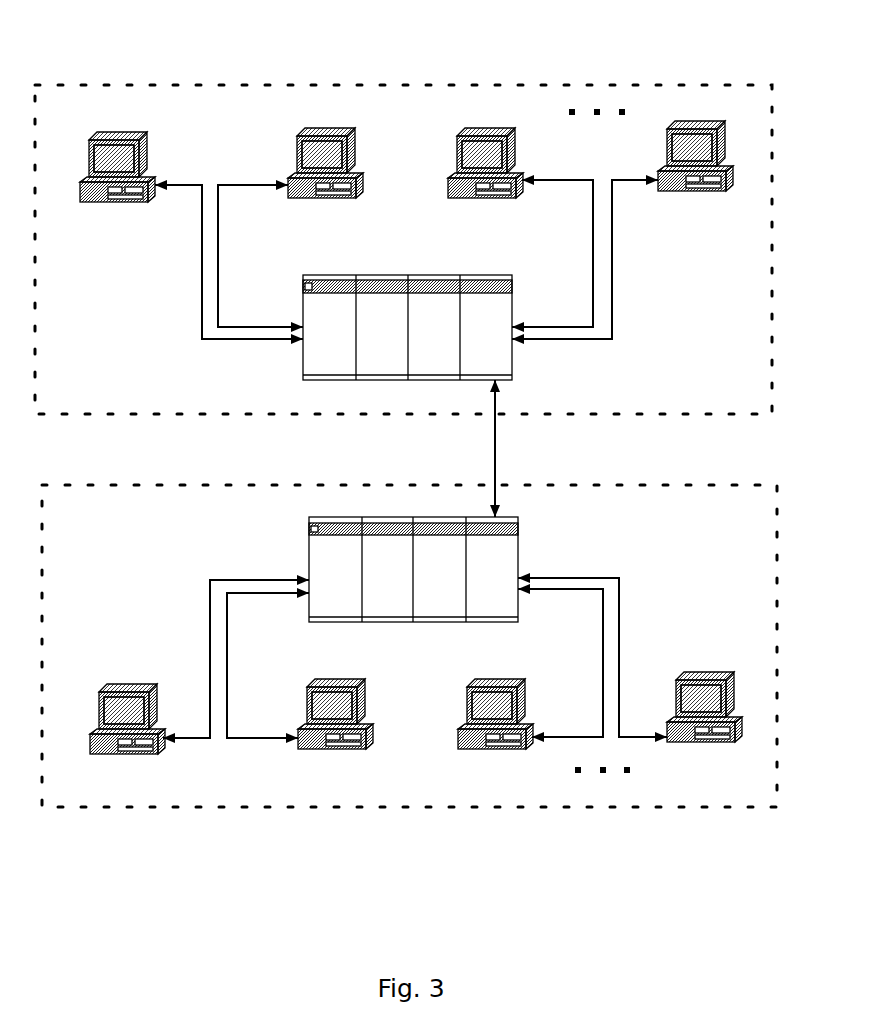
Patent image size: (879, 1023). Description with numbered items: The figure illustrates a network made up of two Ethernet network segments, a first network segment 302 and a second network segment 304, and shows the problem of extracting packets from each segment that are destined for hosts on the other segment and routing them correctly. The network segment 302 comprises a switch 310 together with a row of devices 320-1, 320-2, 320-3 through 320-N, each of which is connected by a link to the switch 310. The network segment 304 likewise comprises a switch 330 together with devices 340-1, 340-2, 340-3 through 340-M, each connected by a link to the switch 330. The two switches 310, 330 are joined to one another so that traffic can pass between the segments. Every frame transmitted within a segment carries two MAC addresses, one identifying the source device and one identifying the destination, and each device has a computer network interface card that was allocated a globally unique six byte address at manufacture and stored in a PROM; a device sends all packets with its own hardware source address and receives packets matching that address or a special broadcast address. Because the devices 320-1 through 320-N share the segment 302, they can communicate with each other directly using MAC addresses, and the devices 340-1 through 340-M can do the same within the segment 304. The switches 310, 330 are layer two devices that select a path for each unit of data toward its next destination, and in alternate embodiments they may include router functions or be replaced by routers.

The network segment 302 is at (242, 84).
The network segment 304 is at (245, 815).
The switch 310 is at (407, 326).
The switch 330 is at (413, 570).
The device 320-1 is at (119, 152).
The device 320-2 is at (325, 149).
The device 320-3 is at (485, 149).
The device 320-N is at (695, 144).
The device 340-1 is at (127, 739).
The device 340-2 is at (335, 736).
The device 340-3 is at (495, 736).
The device 340-M is at (704, 732).